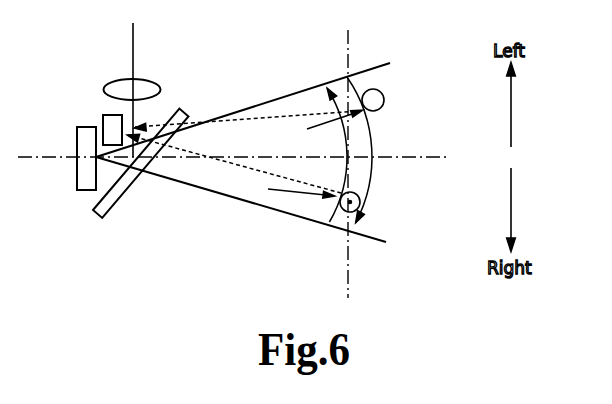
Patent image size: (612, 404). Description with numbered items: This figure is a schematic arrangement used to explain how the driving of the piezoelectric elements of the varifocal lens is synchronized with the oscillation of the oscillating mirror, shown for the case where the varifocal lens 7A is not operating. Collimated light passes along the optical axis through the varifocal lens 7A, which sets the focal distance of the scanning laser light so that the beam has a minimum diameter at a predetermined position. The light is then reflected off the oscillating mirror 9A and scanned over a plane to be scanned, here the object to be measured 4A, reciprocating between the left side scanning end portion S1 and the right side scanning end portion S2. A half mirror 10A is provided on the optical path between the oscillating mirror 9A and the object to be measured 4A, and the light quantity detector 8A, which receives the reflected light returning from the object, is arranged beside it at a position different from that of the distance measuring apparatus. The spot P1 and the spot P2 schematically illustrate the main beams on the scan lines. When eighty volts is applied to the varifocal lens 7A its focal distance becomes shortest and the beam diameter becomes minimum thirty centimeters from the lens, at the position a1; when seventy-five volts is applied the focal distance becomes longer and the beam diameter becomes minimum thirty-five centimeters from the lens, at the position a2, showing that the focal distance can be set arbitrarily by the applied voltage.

The varifocal lens 7A is at (157, 84).
The light quantity detector 8A is at (103, 116).
The oscillating mirror 9A is at (77, 172).
The half mirror 10A is at (115, 203).
The object to be measured 4A is at (350, 276).
The left side scanning end portion S1 is at (241, 209).
The right side scanning end portion S2 is at (243, 106).
The spot P1 is at (360, 202).
The spot P2 is at (384, 100).
The position of minimum beam diameter at shortest focal distance a1 is at (346, 152).
The position of minimum beam diameter at longer focal distance a2 is at (374, 156).